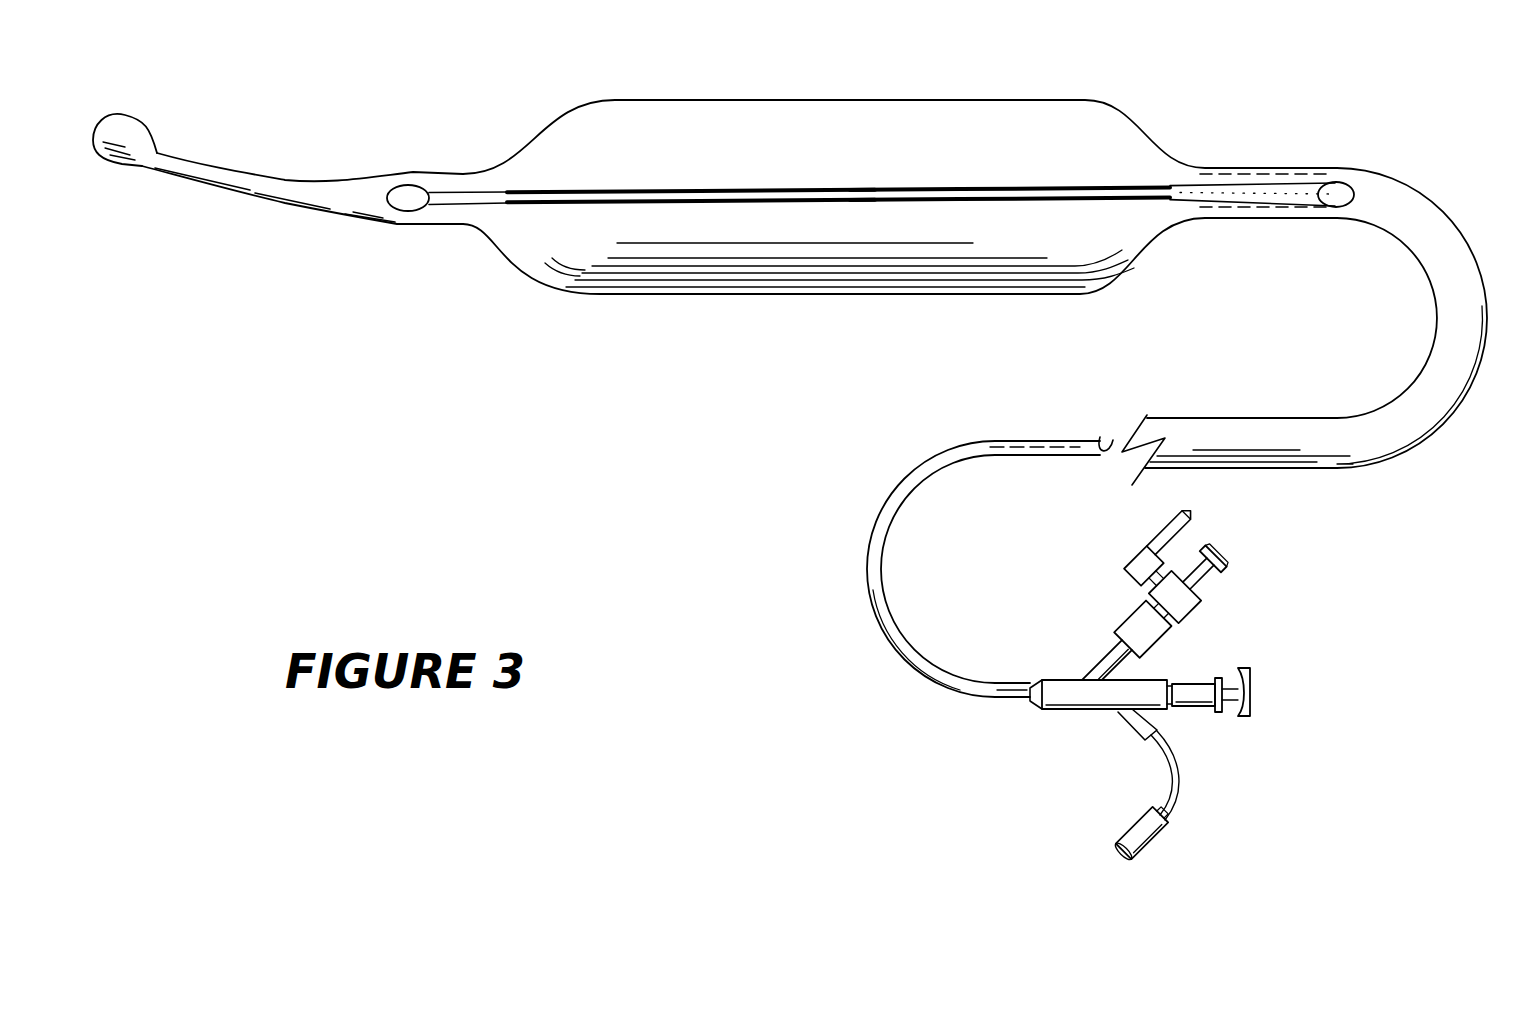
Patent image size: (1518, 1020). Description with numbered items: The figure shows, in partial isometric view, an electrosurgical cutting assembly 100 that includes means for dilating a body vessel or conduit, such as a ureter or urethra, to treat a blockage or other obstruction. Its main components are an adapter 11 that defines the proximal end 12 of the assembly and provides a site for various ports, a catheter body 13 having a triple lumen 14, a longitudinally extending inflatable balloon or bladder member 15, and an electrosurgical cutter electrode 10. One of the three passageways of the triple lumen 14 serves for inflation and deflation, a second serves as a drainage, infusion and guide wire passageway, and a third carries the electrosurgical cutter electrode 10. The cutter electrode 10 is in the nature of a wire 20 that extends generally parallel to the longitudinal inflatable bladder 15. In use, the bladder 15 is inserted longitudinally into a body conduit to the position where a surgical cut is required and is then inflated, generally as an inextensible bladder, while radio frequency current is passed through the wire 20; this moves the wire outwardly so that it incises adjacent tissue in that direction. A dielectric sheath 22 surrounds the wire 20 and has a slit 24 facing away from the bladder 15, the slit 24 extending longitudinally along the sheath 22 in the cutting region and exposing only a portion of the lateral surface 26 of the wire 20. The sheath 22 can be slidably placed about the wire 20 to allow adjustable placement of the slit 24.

The cutting assembly 100 is at (420, 117).
The electrosurgical cutter electrode 10 is at (541, 178).
The sheath 22 is at (602, 178).
The inflatable balloon or bladder member 15 is at (712, 100).
The wire 20 is at (820, 190).
The lateral surface 26 is at (860, 192).
The slit 24 is at (970, 190).
The triple lumen 14 is at (1268, 172).
The catheter body 13 is at (1083, 443).
The adapter 11 is at (1058, 682).
The proximal end 12 is at (1255, 673).